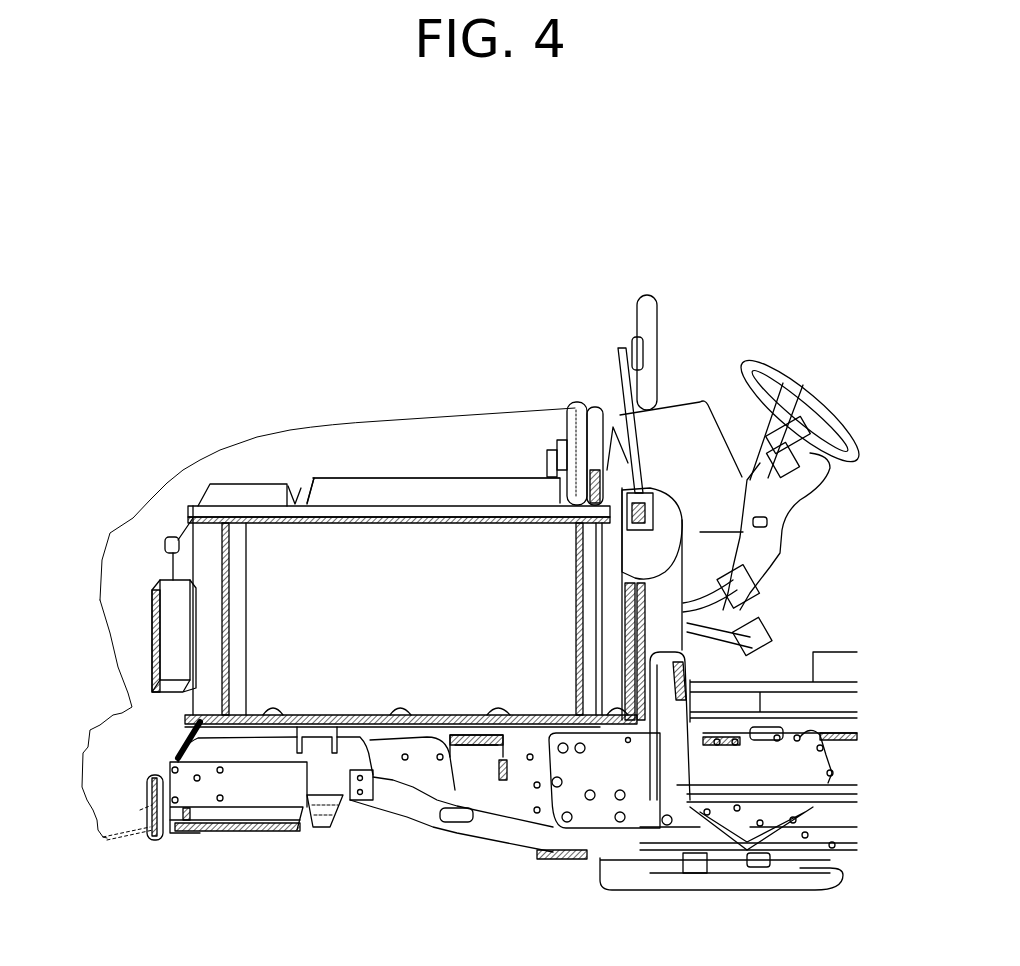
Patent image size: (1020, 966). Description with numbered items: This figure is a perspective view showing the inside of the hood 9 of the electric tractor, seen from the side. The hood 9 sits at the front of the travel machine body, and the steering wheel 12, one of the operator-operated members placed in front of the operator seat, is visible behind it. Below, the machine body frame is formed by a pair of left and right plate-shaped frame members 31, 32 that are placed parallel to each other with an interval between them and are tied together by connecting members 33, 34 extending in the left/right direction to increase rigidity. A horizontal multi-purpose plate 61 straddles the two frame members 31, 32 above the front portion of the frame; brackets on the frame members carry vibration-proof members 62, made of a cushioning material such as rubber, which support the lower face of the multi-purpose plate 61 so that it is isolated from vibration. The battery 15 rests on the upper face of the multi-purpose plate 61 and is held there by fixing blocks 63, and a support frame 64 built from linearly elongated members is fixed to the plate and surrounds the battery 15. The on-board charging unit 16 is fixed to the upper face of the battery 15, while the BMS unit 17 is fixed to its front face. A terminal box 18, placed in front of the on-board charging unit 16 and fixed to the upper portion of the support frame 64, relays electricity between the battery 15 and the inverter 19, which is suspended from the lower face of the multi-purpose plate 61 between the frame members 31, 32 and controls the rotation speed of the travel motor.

The hood 9 is at (373, 420).
The steering wheel 12 is at (810, 395).
The battery 15 is at (490, 563).
The on-board charging unit 16 is at (447, 493).
The BMS unit 17 is at (150, 620).
The terminal box 18 is at (248, 492).
The inverter 19 is at (240, 833).
The frame member 31 is at (583, 817).
The frame member 32 is at (623, 860).
The connecting member 33 is at (103, 837).
The connecting member 34 is at (312, 832).
The multi-purpose plate 61 is at (360, 715).
The vibration-proof member 62 is at (368, 793).
The fixing block 63 is at (287, 707).
The support frame 64 is at (297, 494).